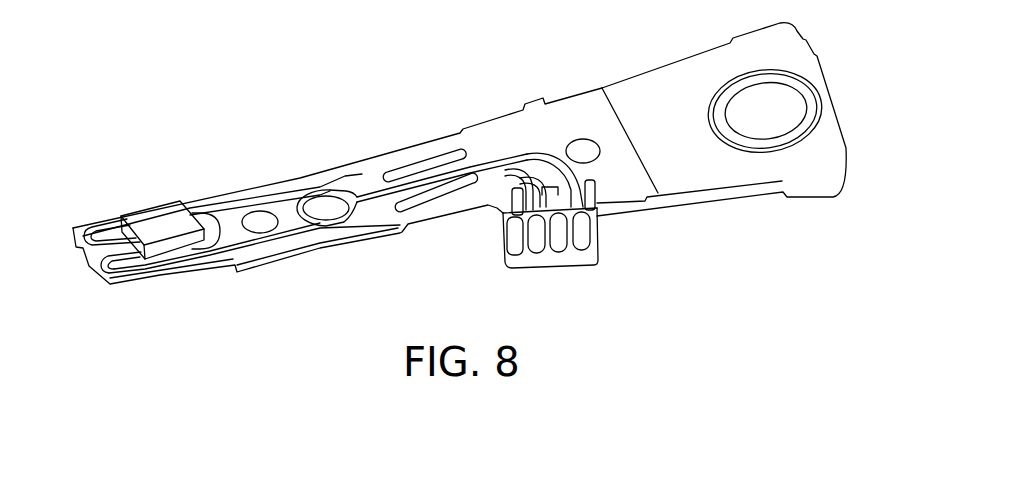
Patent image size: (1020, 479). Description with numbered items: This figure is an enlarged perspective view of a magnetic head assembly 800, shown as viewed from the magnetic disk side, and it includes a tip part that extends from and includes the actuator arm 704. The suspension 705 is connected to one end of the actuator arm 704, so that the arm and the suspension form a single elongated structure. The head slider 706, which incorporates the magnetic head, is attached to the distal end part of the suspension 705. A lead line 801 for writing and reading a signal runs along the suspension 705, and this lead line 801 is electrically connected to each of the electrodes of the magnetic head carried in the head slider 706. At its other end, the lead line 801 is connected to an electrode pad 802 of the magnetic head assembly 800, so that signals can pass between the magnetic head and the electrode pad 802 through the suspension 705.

The magnetic head assembly 800 is at (456, 98).
The actuator arm 704 is at (717, 173).
The suspension 705 is at (363, 175).
The head slider 706 is at (147, 205).
The lead line 801 is at (273, 240).
The electrode pad 802 is at (560, 262).